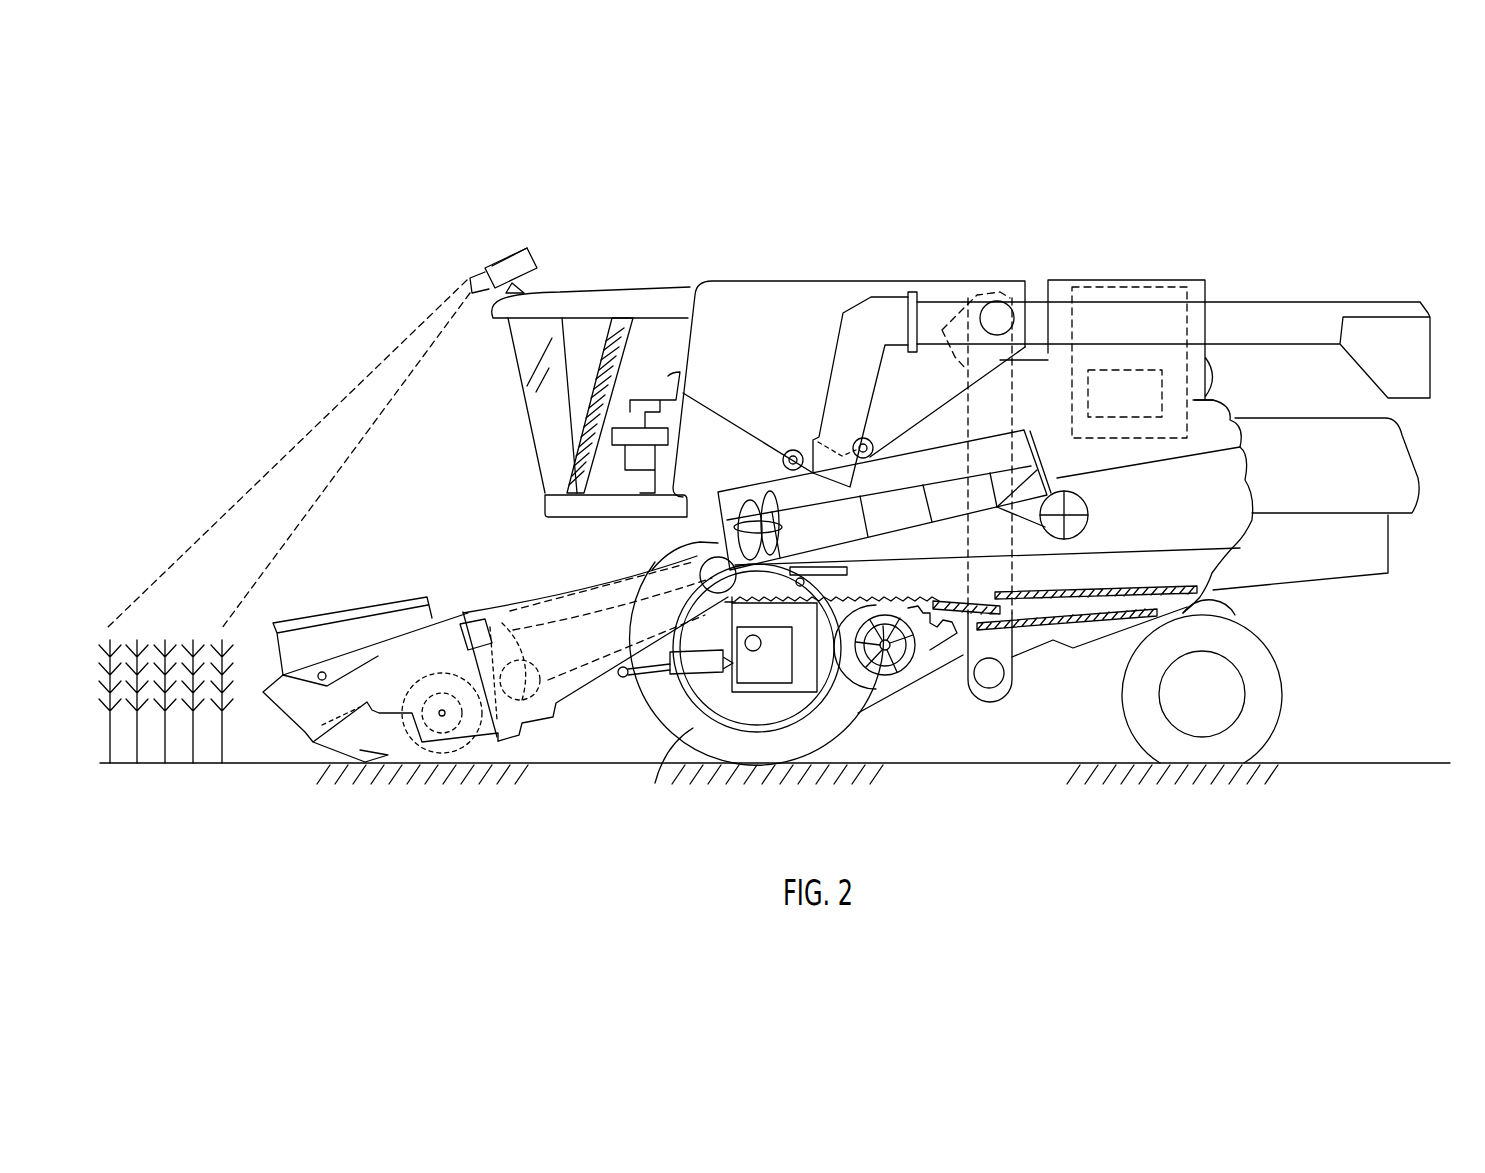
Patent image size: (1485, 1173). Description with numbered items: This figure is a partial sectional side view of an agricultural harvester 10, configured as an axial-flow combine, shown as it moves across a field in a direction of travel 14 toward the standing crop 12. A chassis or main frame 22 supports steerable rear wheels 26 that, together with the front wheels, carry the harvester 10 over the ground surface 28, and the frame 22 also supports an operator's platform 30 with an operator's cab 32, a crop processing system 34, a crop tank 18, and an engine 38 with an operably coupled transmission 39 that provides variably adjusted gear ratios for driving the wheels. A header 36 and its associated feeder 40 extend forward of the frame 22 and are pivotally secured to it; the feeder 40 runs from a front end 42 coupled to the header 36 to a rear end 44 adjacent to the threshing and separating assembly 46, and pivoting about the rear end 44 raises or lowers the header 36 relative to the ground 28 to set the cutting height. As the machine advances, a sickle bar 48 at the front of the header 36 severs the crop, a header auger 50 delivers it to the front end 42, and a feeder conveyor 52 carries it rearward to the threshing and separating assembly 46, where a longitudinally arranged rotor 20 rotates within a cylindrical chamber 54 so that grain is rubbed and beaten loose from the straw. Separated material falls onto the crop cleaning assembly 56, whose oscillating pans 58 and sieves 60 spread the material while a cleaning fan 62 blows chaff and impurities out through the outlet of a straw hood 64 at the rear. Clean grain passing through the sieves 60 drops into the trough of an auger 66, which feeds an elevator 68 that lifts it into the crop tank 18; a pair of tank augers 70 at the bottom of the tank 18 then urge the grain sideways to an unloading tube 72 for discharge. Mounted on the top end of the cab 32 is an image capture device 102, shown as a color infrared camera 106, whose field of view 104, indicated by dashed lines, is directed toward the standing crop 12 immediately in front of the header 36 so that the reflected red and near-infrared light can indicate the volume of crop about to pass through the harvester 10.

The agricultural harvester 10 is at (549, 242).
The standing crop 12 is at (181, 632).
The direction of travel 14 is at (803, 193).
The crop tank 18 is at (788, 283).
The rotor 20 is at (752, 500).
The chassis or main frame 22 is at (1237, 614).
The rear wheels 26 is at (1273, 700).
The ground surface 28 is at (1302, 763).
The operator's platform 30 is at (550, 507).
The operator's cab 32 is at (540, 397).
The crop processing system 34 is at (1115, 541).
The header 36 is at (305, 600).
The engine 38 is at (1093, 290).
The transmission 39 is at (1150, 370).
The feeder 40 is at (528, 592).
The front end 42 is at (467, 658).
The rear end 44 is at (697, 538).
The threshing and separating assembly 46 is at (902, 491).
The sickle bar 48 is at (322, 748).
The header auger 50 is at (455, 750).
The feeder conveyor 52 is at (580, 672).
The cylindrical chamber 54 is at (935, 423).
The crop cleaning assembly 56 is at (951, 690).
The pans 58 is at (885, 600).
The sieves 60 is at (1022, 590).
The cleaning fan 62 is at (872, 678).
The straw hood 64 is at (1407, 482).
The auger 66 is at (988, 680).
The elevator 68 is at (1017, 383).
The tank augers 70 is at (798, 447).
The unloading tube 72 is at (1258, 312).
The image capture device 102 is at (438, 264).
The field of view 104 is at (338, 398).
The color infrared camera 106 is at (520, 255).